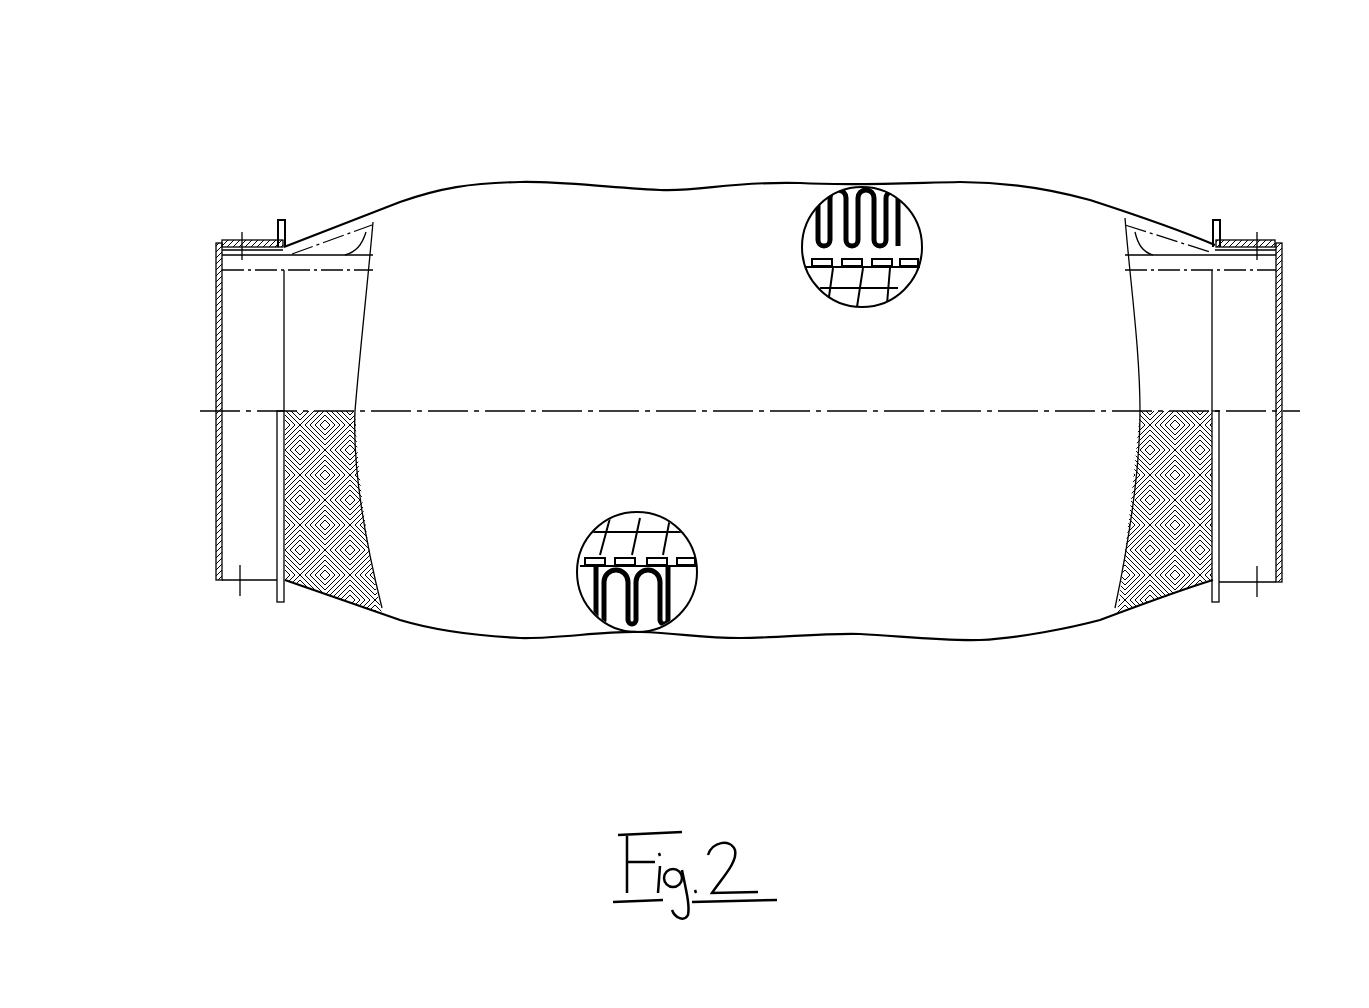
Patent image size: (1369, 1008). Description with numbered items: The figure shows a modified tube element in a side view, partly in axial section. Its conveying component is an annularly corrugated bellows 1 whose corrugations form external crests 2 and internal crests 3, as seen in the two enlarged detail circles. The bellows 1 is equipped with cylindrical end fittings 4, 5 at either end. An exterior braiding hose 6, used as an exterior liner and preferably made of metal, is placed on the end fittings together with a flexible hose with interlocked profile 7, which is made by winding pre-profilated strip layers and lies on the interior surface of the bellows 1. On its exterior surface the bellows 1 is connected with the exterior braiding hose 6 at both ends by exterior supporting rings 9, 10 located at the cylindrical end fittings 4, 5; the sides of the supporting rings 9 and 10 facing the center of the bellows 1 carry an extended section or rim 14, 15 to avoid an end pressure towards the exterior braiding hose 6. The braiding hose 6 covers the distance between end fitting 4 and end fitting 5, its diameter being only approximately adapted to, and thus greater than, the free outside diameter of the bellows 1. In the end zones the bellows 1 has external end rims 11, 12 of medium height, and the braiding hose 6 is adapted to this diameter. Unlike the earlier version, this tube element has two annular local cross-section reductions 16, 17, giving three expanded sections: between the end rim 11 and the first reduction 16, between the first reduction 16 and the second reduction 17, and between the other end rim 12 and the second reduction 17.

The bellows 1 is at (693, 702).
The external crests 2 is at (885, 185).
The internal crests 3 is at (852, 235).
The cylindrical end fitting 4 is at (205, 675).
The cylindrical end fitting 5 is at (1237, 660).
The exterior braiding hose 6 is at (334, 562).
The flexible hose with interlocked profile 7 is at (590, 548).
The exterior supporting ring 9 is at (247, 484).
The exterior supporting ring 10 is at (1325, 502).
The external end rim 11 is at (357, 232).
The external end rim 12 is at (1140, 243).
The rim 14 is at (279, 226).
The rim 15 is at (1226, 228).
The first annular cross-section reduction 16 is at (630, 735).
The second annular cross-section reduction 17 is at (895, 92).